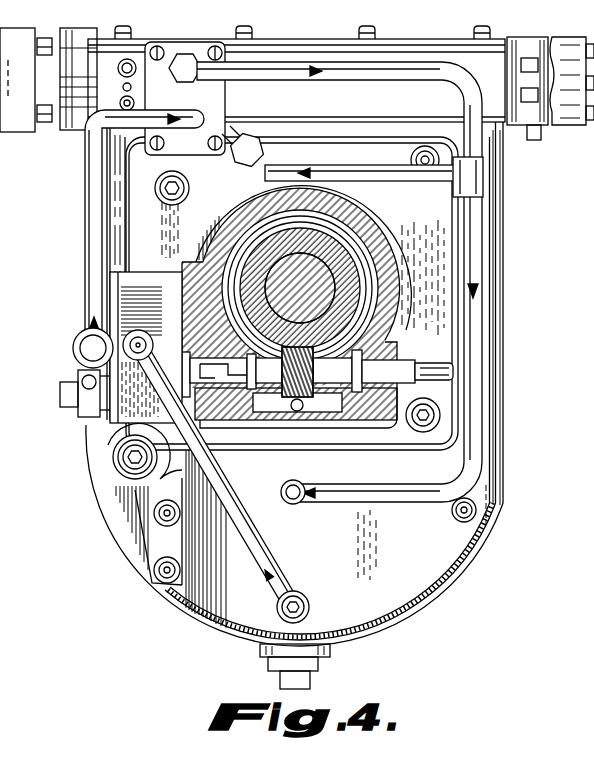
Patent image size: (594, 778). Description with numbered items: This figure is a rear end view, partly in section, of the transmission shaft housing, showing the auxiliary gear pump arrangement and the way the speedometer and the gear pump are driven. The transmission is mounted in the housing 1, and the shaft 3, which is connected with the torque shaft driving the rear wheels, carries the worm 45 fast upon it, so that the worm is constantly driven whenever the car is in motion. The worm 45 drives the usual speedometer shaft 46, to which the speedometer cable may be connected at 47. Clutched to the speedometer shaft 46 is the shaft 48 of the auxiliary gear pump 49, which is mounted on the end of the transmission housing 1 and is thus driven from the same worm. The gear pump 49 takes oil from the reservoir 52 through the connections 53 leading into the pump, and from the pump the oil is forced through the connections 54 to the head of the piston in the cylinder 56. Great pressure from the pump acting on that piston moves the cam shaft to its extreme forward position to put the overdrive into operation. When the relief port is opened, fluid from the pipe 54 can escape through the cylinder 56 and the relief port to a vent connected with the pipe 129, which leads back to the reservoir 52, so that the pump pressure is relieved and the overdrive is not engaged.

The transmission housing 1 is at (120, 527).
The shaft 3 is at (313, 272).
The worm 45 is at (367, 277).
The speedometer shaft 46 is at (402, 371).
The speedometer cable connection 47 is at (433, 363).
The pump shaft 48 is at (190, 340).
The auxiliary gear pump 49 is at (128, 268).
The reservoir 52 is at (414, 558).
The connections 53 is at (258, 553).
The connections 54 is at (96, 213).
The cylinder 56 is at (212, 113).
The pipe 129 is at (388, 68).